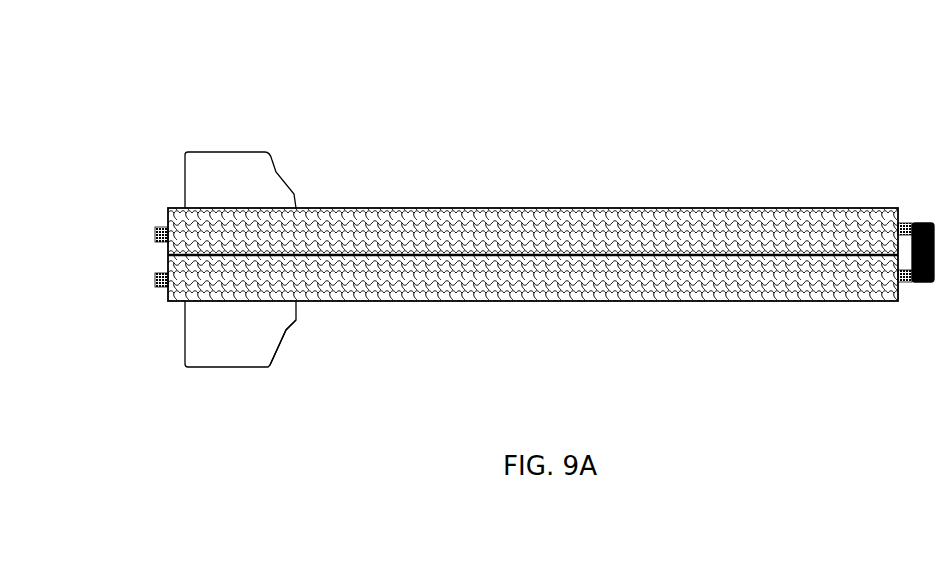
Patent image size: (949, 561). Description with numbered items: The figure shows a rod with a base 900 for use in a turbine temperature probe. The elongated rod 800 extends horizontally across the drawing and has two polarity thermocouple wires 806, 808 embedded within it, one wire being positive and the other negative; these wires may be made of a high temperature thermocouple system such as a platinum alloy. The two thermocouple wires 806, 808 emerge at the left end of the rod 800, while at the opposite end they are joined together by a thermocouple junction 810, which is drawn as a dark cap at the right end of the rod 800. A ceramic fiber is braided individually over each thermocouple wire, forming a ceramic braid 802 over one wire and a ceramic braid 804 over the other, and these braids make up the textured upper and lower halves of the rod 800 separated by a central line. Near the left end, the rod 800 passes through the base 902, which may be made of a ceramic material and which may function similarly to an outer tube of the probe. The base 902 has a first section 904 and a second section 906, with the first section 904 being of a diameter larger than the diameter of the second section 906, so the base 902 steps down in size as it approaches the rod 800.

The rod 800 is at (672, 196).
The ceramic braid 802 is at (525, 231).
The ceramic braid 804 is at (385, 287).
The thermocouple wire 806 is at (143, 227).
The thermocouple wire 808 is at (143, 280).
The thermocouple junction 810 is at (920, 211).
The rod and block assembly 900 is at (308, 139).
The base 902 is at (224, 165).
The first section 904 is at (212, 379).
The second section 906 is at (281, 339).